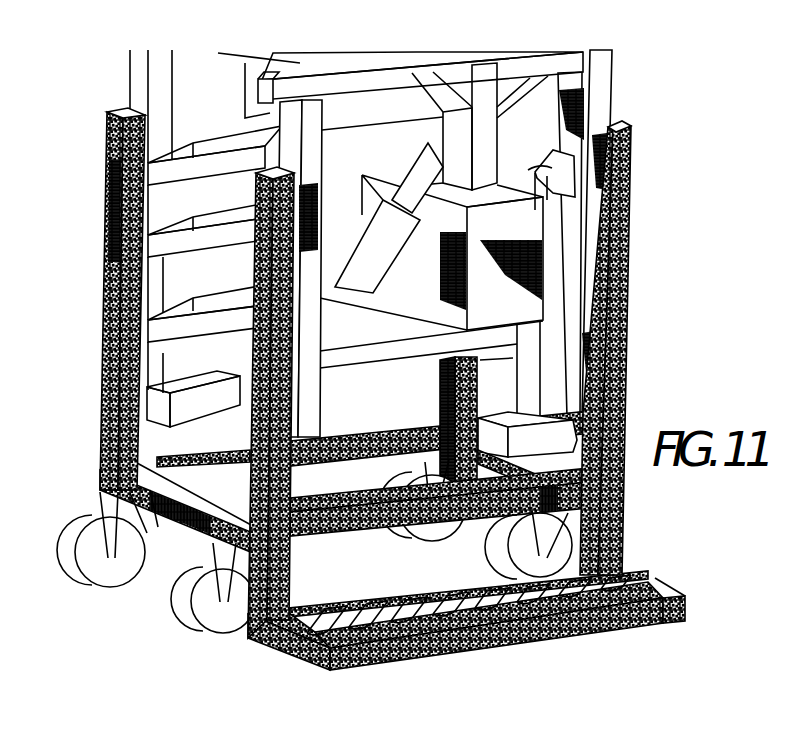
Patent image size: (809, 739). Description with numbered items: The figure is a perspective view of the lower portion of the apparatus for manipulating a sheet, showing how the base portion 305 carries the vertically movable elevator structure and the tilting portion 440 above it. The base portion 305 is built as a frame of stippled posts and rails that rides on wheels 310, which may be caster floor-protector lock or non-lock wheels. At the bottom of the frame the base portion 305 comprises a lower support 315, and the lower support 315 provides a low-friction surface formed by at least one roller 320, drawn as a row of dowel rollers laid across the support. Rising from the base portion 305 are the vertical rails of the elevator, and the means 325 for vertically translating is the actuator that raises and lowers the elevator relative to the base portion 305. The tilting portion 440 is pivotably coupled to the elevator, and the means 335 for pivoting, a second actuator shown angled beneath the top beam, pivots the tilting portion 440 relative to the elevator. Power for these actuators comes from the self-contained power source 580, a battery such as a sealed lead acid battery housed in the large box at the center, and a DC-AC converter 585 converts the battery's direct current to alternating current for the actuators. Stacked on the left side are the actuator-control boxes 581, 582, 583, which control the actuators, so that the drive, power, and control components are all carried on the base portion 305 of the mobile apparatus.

The base portion 305 is at (110, 370).
The wheels 310 is at (73, 570).
The lower support 315 is at (420, 648).
The roller 320 is at (500, 605).
The means for vertically translating 325 is at (550, 393).
The means for pivoting 335 is at (370, 245).
The tilting portion 440 is at (363, 72).
The self-contained power source 580 is at (527, 272).
The actuator-control box 581 is at (222, 163).
The actuator-control box 582 is at (215, 242).
The actuator-control box 583 is at (203, 315).
The DC-AC converter 585 is at (258, 81).